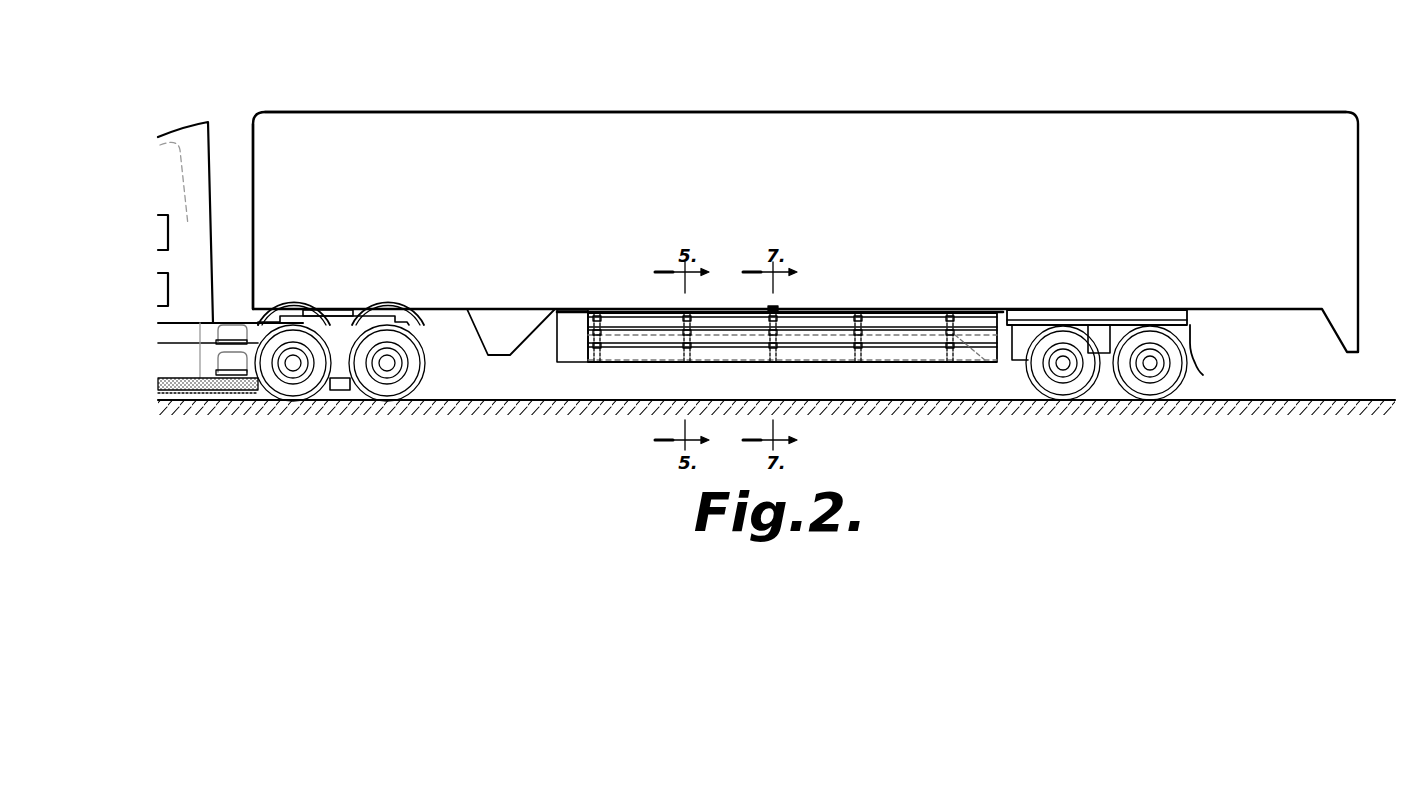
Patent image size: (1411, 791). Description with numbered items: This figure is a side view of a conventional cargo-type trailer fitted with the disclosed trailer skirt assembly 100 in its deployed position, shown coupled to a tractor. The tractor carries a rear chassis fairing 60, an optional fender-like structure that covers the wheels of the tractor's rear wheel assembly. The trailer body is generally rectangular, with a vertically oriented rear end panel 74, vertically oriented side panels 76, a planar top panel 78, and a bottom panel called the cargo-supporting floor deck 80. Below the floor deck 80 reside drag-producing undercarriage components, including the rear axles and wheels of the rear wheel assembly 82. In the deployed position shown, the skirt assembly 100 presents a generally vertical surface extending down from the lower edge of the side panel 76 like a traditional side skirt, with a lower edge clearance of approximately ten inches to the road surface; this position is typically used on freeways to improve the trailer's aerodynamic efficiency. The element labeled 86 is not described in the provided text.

The rear chassis fairing 60 is at (342, 332).
The rear end panel 74 is at (1358, 190).
The side panel 76 is at (457, 137).
The top panel 78 is at (565, 112).
The cargo-supporting floor deck 80 is at (450, 310).
The rear wheel assembly 82 is at (1108, 379).
The support block 86 is at (343, 396).
The trailer skirt assembly 100 is at (843, 371).